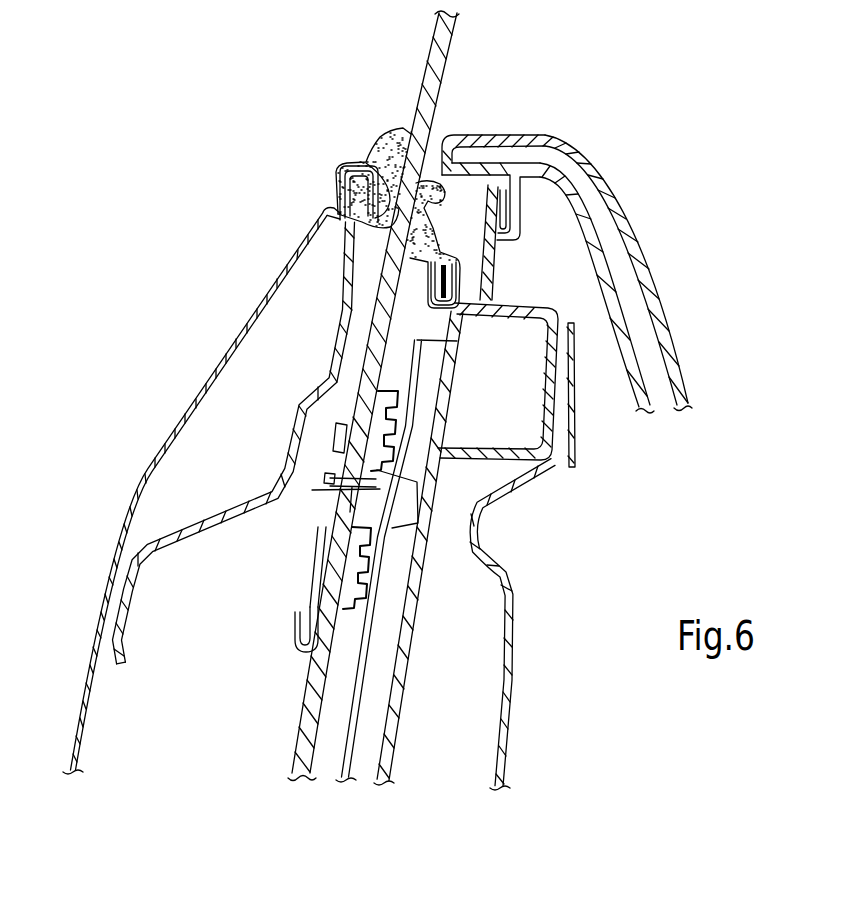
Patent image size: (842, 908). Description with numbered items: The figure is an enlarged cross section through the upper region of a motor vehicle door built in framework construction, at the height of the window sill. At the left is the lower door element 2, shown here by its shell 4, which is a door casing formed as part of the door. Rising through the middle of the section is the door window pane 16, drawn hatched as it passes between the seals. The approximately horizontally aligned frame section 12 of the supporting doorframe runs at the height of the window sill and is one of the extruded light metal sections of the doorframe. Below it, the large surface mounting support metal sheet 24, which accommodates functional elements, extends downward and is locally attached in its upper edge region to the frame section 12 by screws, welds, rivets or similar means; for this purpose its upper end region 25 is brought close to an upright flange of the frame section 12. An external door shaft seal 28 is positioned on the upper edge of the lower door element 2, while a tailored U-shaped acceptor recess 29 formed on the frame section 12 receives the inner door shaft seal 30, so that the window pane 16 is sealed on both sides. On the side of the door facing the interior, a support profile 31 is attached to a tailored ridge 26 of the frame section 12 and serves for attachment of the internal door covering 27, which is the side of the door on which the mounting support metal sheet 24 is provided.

The lower door element 2 is at (283, 252).
The shell 4 is at (246, 330).
The frame section 12 is at (558, 414).
The door window pane 16 is at (443, 42).
The mounting support metal sheet 24 is at (518, 702).
The upper end region 25 is at (572, 338).
The ridge 26 is at (501, 228).
The internal door covering 27 is at (621, 208).
The external door shaft seal 28 is at (392, 126).
The acceptor recess 29 is at (438, 311).
The inner door shaft seal 30 is at (430, 197).
The support profile 31 is at (479, 188).